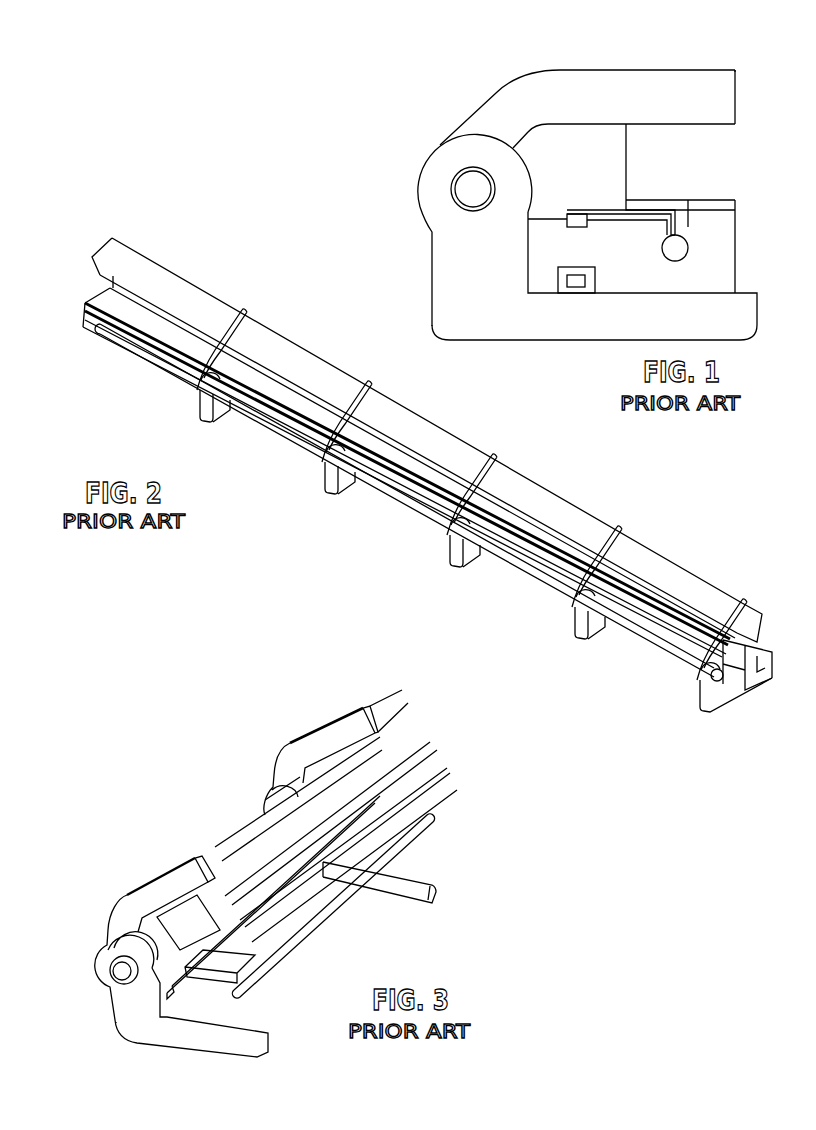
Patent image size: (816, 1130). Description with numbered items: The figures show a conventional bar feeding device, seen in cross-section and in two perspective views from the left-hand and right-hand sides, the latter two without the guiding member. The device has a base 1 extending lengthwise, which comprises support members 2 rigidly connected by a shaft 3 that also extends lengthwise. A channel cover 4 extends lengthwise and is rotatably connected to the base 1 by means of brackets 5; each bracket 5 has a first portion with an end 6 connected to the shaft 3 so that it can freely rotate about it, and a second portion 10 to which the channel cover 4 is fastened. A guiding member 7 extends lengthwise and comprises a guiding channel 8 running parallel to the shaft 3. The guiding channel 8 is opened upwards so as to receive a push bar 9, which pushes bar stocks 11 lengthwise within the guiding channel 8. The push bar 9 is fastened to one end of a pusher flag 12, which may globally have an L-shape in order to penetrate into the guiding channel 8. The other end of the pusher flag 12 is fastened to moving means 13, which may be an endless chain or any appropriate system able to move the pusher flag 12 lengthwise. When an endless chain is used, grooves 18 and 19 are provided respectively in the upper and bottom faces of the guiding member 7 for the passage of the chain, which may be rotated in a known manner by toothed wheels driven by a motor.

In FIG. 1, the base 1 is at (407, 291).
In FIG. 3, the base 1 is at (115, 1068).
In FIG. 1, the support members 2 is at (465, 268).
In FIG. 2, the support members 2 is at (198, 404).
In FIG. 3, the support members 2 is at (133, 1003).
In FIG. 1, the shaft 3 is at (468, 185).
In FIG. 2, the shaft 3 is at (380, 490).
In FIG. 3, the shaft 3 is at (93, 963).
In FIG. 1, the channel cover 4 is at (710, 152).
In FIG. 2, the channel cover 4 is at (422, 447).
In FIG. 3, the channel cover 4 is at (227, 888).
In FIG. 1, the brackets 5 is at (628, 63).
In FIG. 2, the brackets 5 is at (240, 310).
In FIG. 3, the brackets 5 is at (173, 878).
In FIG. 2, the end 6 is at (203, 375).
In FIG. 1, the guiding member 7 is at (710, 225).
In FIG. 2, the guiding member 7 is at (766, 652).
In FIG. 1, the guiding channel 8 is at (683, 230).
In FIG. 1, the push bar 9 is at (676, 261).
In FIG. 3, the push bar 9 is at (300, 938).
In FIG. 1, the second portion 10 is at (728, 90).
In FIG. 3, the bar stocks 11 is at (445, 805).
In FIG. 1, the pusher flag 12 is at (612, 205).
In FIG. 3, the pusher flag 12 is at (227, 965).
In FIG. 1, the moving means 13 is at (580, 273).
In FIG. 3, the moving means 13 is at (183, 985).
In FIG. 1, the groove 18 is at (566, 222).
In FIG. 1, the groove 19 is at (560, 275).